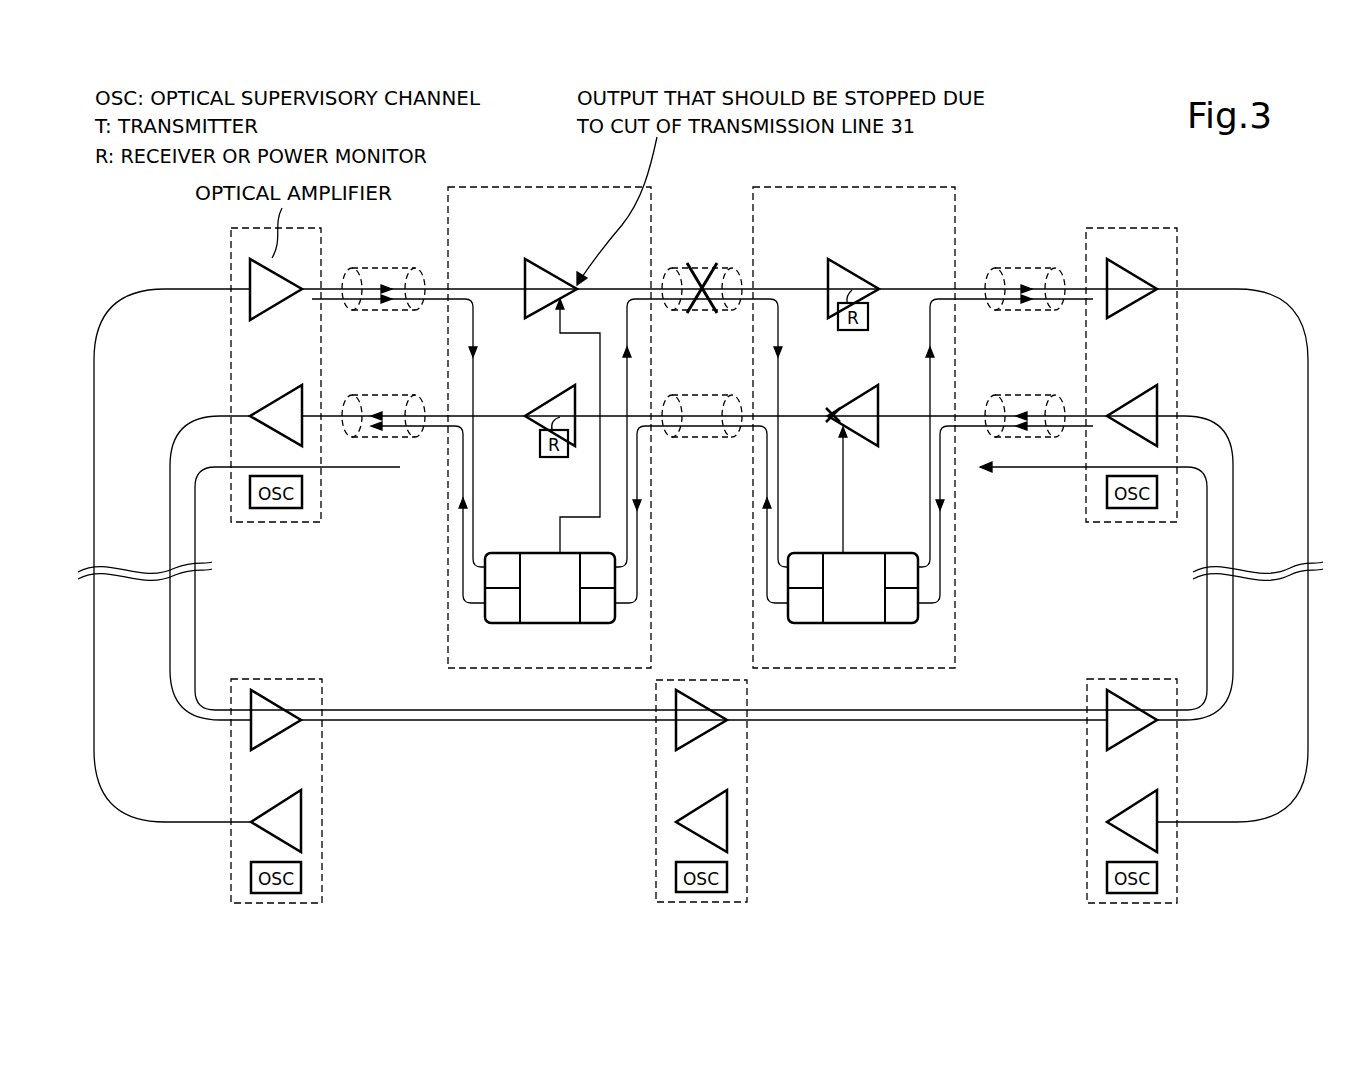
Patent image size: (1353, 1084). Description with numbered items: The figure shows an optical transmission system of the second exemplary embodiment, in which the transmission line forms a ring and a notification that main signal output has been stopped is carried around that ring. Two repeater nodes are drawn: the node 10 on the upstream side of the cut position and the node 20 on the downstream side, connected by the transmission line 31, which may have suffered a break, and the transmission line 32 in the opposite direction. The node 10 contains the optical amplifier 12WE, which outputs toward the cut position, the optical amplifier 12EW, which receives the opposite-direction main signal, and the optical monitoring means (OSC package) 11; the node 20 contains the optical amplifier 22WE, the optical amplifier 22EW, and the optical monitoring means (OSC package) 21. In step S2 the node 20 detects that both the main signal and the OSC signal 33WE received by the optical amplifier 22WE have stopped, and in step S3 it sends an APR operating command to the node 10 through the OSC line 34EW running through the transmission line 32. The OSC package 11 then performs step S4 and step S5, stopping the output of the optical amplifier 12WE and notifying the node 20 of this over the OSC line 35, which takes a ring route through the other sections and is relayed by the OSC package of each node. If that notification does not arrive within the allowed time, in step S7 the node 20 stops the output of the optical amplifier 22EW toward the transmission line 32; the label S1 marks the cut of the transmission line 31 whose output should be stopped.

The node 10 is at (502, 187).
The node 20 is at (805, 187).
The optical monitoring means (OSC package) 11 is at (540, 623).
The optical monitoring means (OSC package) 21 is at (855, 623).
The optical amplifier 12WE is at (534, 319).
The optical amplifier 12EW is at (550, 385).
The optical amplifier 22WE is at (853, 270).
The optical amplifier 22EW is at (852, 385).
The transmission line 31 is at (737, 268).
The transmission line 32 is at (737, 395).
The OSC signal 33WE is at (688, 313).
The OSC line 34EW is at (729, 437).
The OSC line 35 is at (197, 617).
The signal S1 is at (705, 321).
The Step S2 is at (833, 444).
The Step S3 is at (811, 642).
The Step S4 is at (580, 554).
The Step S5 is at (502, 426).
The Step S7 is at (829, 490).